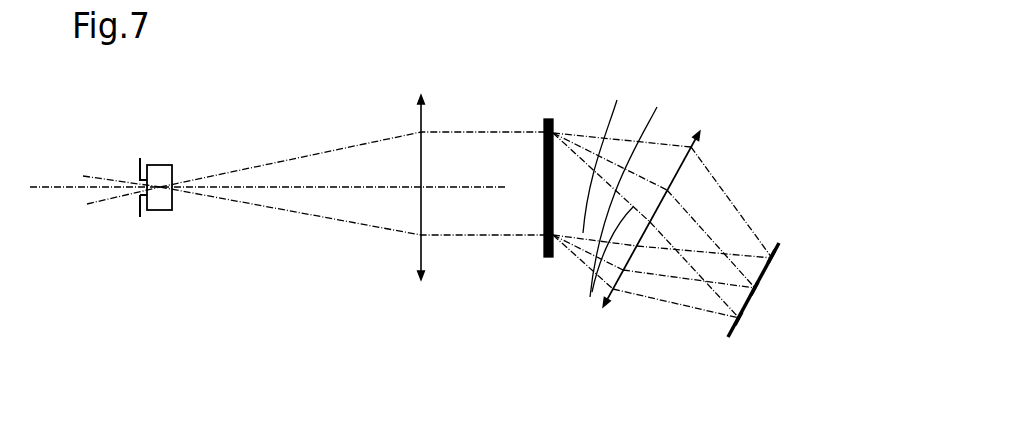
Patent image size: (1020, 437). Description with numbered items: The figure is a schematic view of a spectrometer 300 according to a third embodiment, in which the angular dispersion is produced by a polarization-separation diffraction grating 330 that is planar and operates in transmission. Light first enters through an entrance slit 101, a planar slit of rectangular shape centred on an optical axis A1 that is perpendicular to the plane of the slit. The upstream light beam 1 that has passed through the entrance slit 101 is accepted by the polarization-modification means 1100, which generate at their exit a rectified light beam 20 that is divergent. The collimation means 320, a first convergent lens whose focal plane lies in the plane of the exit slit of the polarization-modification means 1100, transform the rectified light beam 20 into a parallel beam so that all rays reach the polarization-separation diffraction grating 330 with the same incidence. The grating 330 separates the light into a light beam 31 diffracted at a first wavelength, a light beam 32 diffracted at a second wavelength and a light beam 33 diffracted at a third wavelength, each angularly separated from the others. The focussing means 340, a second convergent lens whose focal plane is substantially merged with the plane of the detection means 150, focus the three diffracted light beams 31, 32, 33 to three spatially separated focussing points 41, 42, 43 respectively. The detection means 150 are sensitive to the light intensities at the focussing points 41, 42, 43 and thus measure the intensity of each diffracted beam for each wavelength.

The optical axis A1 is at (58, 187).
The upstream light beam 1 is at (105, 178).
The polarization-modification means 1100 is at (157, 165).
The entrance slit 101 is at (140, 205).
The rectified light beam 20 is at (327, 205).
The collimation means 320 is at (418, 254).
The polarization-separation diffraction grating 330 is at (549, 117).
The light beam diffracted at the wavelength λ1 31 is at (585, 138).
The light beam diffracted at the wavelength λ2 32 is at (612, 163).
The light beam diffracted at the wavelength λ3 33 is at (598, 262).
The focussing means 340 is at (702, 138).
The detection means 150 is at (727, 335).
The first focussing point 41 is at (773, 260).
The second focussing point 42 is at (755, 292).
The third focussing point 43 is at (741, 320).
The spectrometer 300 is at (174, 296).